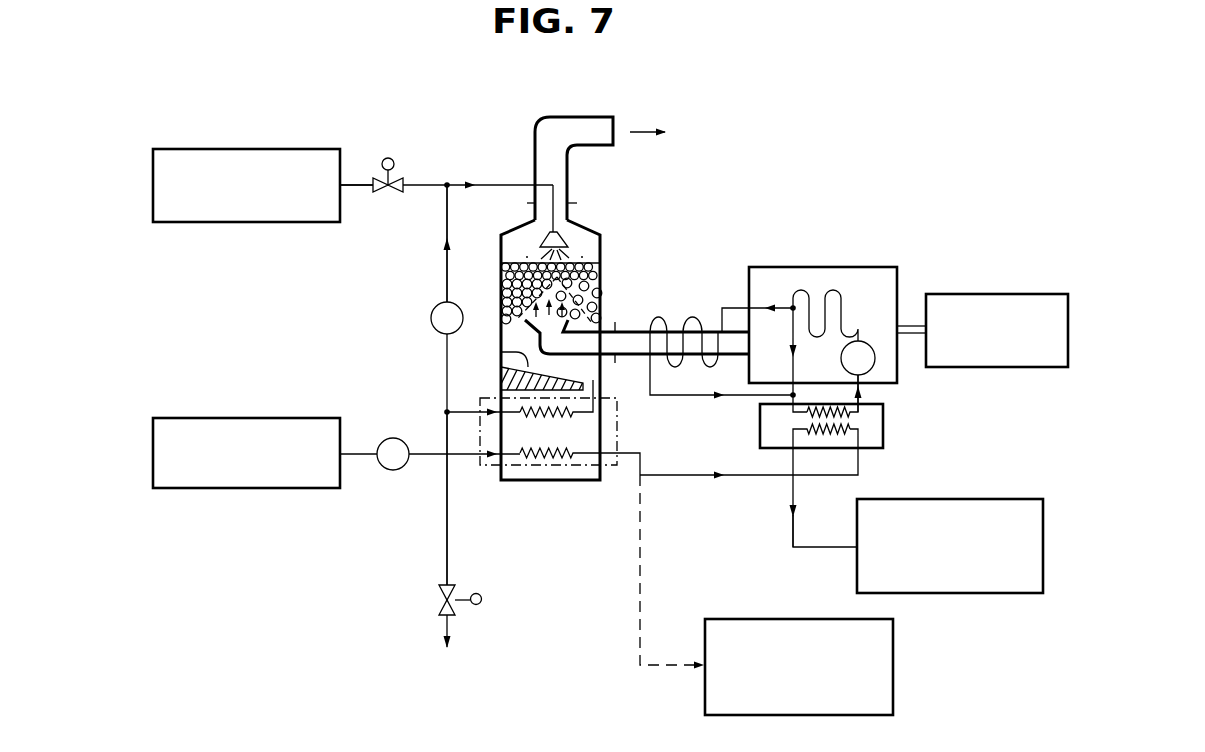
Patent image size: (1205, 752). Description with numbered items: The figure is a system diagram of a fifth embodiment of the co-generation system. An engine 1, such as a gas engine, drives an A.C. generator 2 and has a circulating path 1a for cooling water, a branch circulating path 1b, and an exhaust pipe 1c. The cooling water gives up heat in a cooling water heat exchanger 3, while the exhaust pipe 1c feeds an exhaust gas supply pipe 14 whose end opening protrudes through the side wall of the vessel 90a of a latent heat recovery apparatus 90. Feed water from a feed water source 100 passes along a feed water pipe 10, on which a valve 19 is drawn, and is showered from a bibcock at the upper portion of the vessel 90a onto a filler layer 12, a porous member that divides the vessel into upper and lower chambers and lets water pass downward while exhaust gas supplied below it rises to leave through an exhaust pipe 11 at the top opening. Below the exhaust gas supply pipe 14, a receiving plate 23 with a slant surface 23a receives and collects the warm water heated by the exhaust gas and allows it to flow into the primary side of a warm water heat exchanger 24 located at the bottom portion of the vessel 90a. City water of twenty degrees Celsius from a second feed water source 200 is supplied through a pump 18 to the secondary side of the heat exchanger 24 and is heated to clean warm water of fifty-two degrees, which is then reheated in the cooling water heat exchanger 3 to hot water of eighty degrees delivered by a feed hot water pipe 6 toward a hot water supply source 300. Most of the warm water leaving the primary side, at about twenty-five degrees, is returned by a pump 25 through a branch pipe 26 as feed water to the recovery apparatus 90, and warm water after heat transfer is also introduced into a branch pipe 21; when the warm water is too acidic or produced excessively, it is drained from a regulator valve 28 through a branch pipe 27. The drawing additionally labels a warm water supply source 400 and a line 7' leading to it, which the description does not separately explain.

The feed water source 100 is at (276, 149).
The valve 19 is at (393, 158).
The feed water pipe 10 is at (500, 185).
The exhaust pipe 11 is at (577, 117).
The latent heat recovery apparatus 90 is at (601, 222).
The vessel 90a is at (601, 247).
The filler layer 12 is at (501, 287).
The branch pipe 26 is at (447, 272).
The pump 25 is at (431, 318).
The slant surface 23a is at (501, 352).
The receiving plate 23 is at (501, 383).
The exhaust gas supply pipe 14 is at (586, 357).
The warm water heat exchanger 24 is at (483, 466).
The feed water source 200 is at (270, 418).
The pump 18 is at (389, 439).
The branch pipe 27 is at (447, 548).
The regulator valve 28 is at (438, 604).
The branch circulating path 1b is at (693, 317).
The exhaust pipe 1c is at (633, 331).
The engine 1 is at (855, 267).
The branch pipe 21 is at (872, 346).
The circulating path for cooling water 1a is at (861, 395).
The A.C. generator 2 is at (1030, 294).
The cooling water heat exchanger 3 is at (885, 440).
The feed hot water pipe 6 is at (793, 546).
The hot water supply source (80°C) 300 is at (985, 499).
The warm water pipe 7' is at (672, 572).
The warm water supply source (50°C) 400 is at (893, 632).